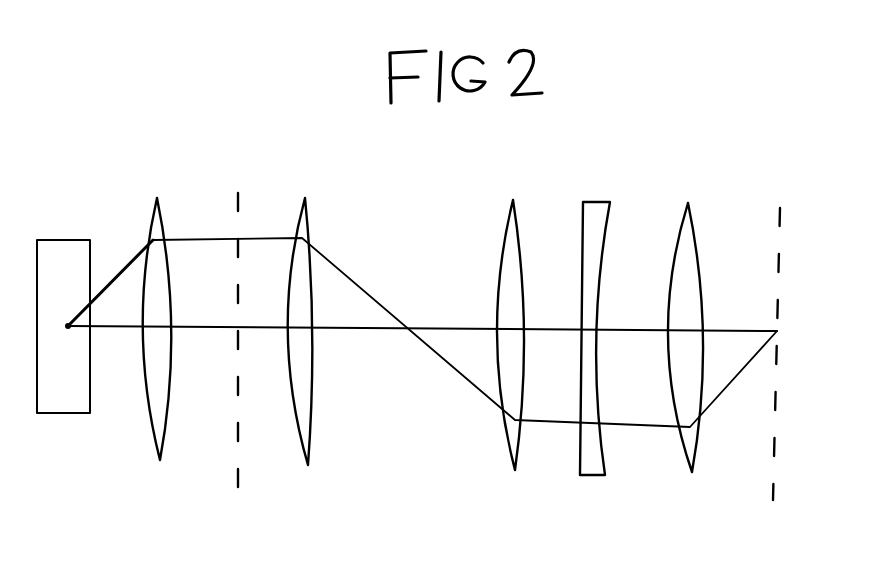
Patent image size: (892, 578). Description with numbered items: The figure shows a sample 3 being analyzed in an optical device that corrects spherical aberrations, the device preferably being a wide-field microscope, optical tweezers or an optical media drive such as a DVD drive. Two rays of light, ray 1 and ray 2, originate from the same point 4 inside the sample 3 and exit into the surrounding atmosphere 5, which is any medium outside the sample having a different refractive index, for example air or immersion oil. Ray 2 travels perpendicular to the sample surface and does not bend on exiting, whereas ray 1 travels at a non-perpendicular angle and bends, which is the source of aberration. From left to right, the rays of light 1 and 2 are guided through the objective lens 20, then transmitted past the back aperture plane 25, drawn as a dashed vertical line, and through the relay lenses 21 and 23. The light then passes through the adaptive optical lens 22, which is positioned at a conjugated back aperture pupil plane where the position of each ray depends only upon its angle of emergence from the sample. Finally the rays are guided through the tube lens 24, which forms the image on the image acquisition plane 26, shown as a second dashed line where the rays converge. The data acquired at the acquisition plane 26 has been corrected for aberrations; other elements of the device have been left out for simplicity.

The ray 1 is at (122, 268).
The ray 2 is at (124, 337).
The sample 3 is at (73, 426).
The point 4 is at (70, 339).
The atmosphere 5 is at (112, 203).
The objective lens 20 is at (172, 443).
The relay lens 21 is at (320, 432).
The adaptive optical lens 22 is at (595, 481).
The relay lens 23 is at (503, 447).
The tube lens 24 is at (702, 222).
The back aperture plane 25 is at (250, 210).
The image acquisition plane 26 is at (788, 263).